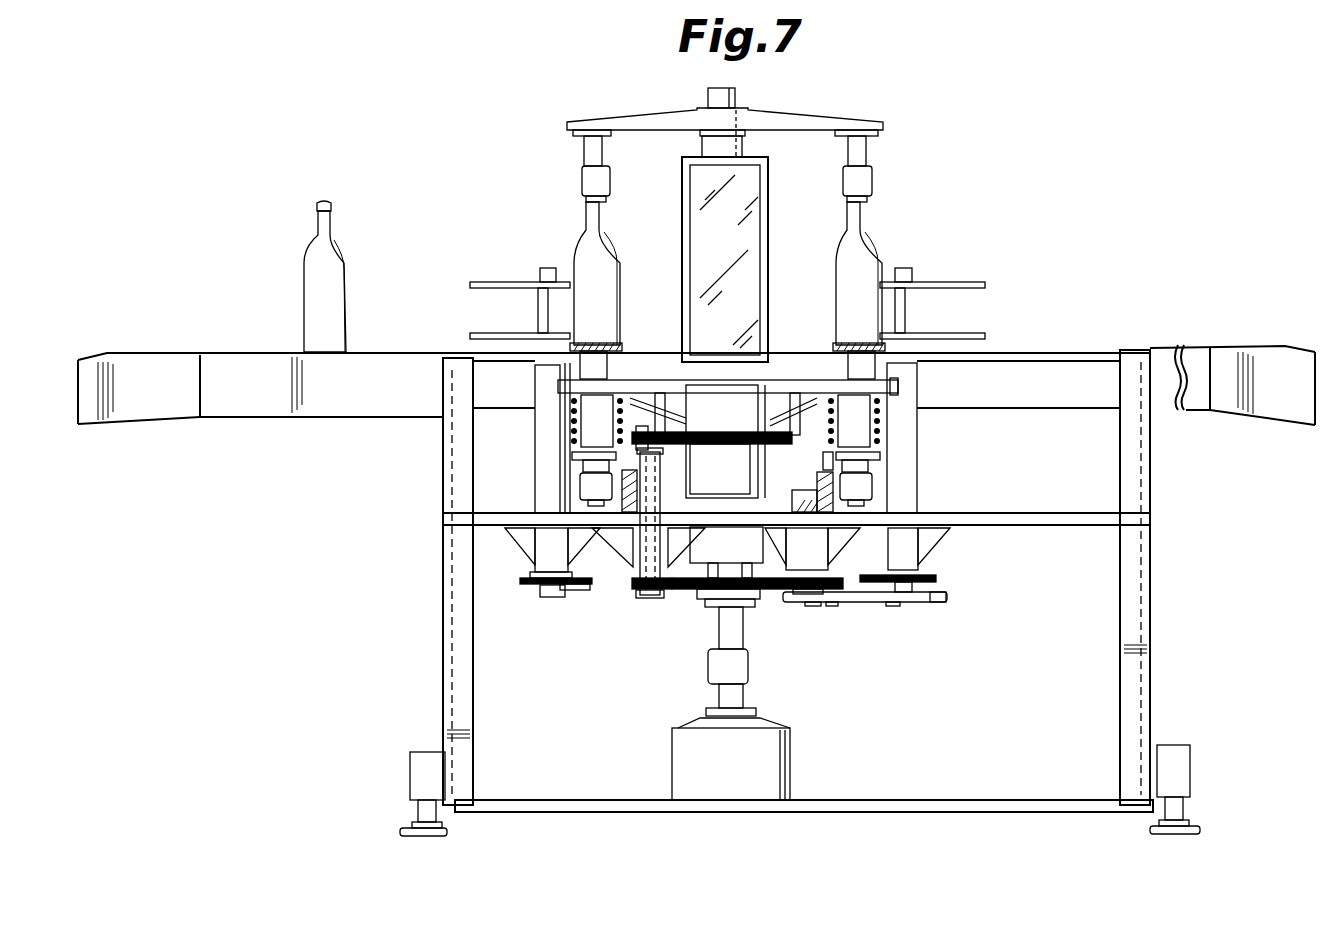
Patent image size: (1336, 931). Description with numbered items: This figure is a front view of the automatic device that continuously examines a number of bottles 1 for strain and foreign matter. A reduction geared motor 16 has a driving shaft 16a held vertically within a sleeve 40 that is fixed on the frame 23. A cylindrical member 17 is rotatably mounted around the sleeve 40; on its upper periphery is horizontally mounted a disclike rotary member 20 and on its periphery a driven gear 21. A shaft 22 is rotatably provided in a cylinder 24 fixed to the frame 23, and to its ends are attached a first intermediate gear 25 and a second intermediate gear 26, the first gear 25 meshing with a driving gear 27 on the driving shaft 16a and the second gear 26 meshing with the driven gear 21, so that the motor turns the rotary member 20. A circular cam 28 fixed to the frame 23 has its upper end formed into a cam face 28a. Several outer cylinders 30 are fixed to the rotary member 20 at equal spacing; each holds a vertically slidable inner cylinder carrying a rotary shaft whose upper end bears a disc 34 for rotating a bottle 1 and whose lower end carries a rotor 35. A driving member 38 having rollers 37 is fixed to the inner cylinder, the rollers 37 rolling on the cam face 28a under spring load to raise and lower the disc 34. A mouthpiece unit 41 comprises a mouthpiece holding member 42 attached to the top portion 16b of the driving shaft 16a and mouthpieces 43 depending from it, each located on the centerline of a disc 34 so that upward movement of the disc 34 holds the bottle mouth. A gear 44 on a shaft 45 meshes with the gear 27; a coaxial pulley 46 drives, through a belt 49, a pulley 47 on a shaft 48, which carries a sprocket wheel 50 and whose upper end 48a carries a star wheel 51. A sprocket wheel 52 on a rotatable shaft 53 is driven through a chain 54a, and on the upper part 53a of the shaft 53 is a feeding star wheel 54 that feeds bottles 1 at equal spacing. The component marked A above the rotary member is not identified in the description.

The bottle 1 is at (316, 301).
The reduction geared motor 16 is at (716, 781).
The driving shaft 16a is at (724, 629).
The top portion of the driving shaft 16b is at (735, 88).
The cylindrical member 17 is at (720, 421).
The rotary member 20 is at (670, 394).
The driven gear 21 is at (731, 444).
The shaft 22 is at (662, 486).
The frame 23 is at (448, 488).
The cylinder 24 is at (635, 564).
The first intermediate gear 25 is at (646, 592).
The second intermediate gear 26 is at (632, 445).
The driving gear 27 is at (688, 592).
The circular cam 28 is at (818, 488).
The cam face 28a is at (811, 486).
The outer cylinder 30 is at (586, 427).
The bottle rotating disc 34 is at (620, 343).
The rotor 35 is at (585, 488).
The roller 37 is at (826, 453).
The driving member 38 is at (575, 458).
The sleeve 40 is at (744, 146).
The mouthpiece unit 41 is at (580, 152).
The mouthpiece holding member 42 is at (654, 118).
The mouthpiece 43 is at (582, 180).
The gear 44 is at (835, 578).
The shaft 45 is at (812, 606).
The pulley 46 is at (834, 606).
The pulley 47 is at (938, 602).
The shaft 48 is at (896, 606).
The upper end of the shaft 48a is at (906, 268).
The belt 49 is at (862, 602).
The sprocket wheel 50 is at (924, 568).
The star wheel 51 is at (953, 333).
The sprocket wheel 52 is at (540, 592).
The rotatable shaft 53 is at (536, 578).
The upper part of the shaft 53a is at (546, 268).
The feeding star wheel 54 is at (503, 334).
The chain 54a is at (608, 584).
The central box A is at (712, 260).